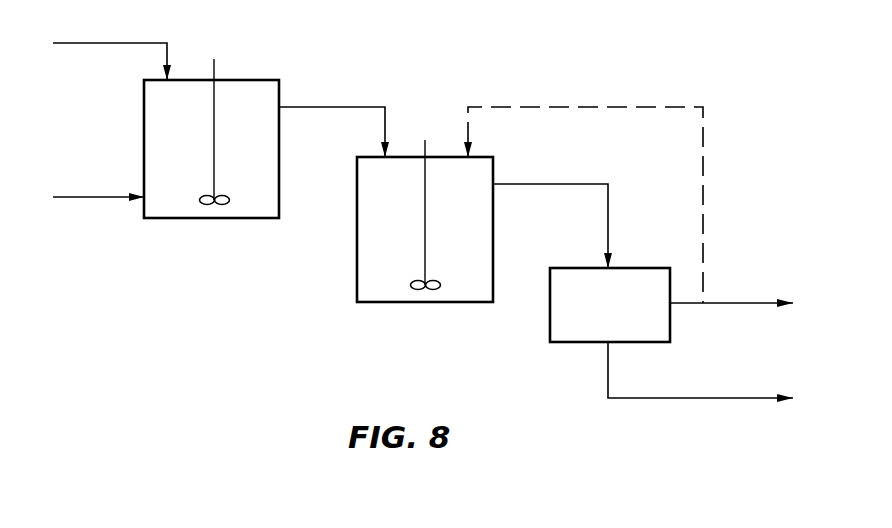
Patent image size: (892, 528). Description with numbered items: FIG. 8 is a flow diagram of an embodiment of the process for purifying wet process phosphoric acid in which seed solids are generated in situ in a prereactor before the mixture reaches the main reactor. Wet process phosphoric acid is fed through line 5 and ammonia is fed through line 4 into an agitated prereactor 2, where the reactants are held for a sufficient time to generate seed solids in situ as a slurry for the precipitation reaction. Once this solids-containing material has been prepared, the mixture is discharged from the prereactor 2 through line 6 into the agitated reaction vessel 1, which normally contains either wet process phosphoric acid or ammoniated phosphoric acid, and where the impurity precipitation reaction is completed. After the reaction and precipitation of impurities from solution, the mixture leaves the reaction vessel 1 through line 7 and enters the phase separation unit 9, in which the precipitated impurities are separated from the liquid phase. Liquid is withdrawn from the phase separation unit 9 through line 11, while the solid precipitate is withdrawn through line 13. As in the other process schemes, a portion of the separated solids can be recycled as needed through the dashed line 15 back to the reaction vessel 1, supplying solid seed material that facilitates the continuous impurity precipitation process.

The reaction vessel 1 is at (355, 258).
The prereactor 2 is at (281, 155).
The line 4 is at (93, 197).
The line 5 is at (150, 43).
The line 6 is at (335, 105).
The line 7 is at (550, 184).
The phase separation unit 9 is at (633, 272).
The line 11 is at (735, 398).
The line 13 is at (743, 303).
The line 15 is at (703, 155).